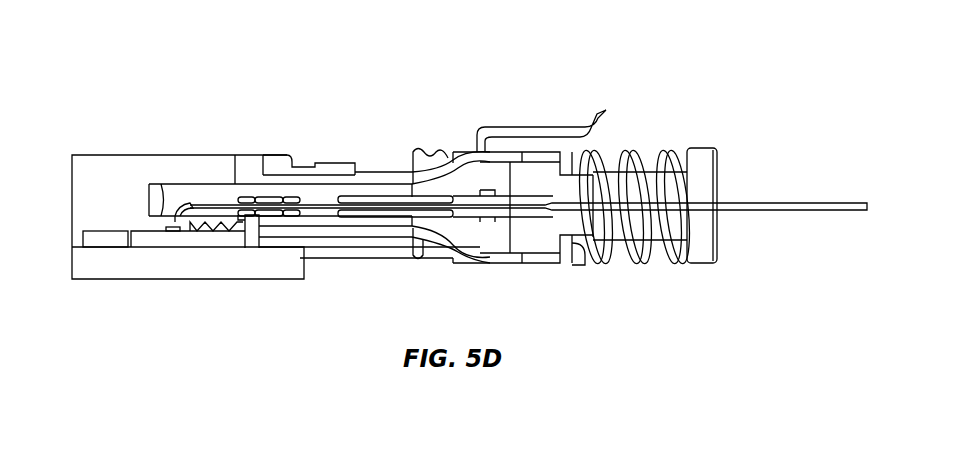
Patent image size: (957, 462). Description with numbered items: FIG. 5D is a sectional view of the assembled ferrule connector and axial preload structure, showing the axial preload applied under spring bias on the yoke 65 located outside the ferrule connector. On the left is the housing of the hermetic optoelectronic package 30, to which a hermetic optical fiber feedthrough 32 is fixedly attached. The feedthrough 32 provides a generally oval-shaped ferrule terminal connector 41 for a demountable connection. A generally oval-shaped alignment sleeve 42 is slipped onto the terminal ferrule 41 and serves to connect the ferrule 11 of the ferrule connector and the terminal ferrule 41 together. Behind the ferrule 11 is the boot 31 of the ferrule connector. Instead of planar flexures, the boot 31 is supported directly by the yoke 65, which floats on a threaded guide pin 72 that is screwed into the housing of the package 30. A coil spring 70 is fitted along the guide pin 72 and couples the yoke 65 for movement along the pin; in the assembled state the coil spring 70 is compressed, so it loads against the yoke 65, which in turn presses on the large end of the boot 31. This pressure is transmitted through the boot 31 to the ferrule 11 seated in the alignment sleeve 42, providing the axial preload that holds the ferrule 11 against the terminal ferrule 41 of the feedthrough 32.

The hermetic optoelectronic package 30 is at (273, 166).
The hermetic optical fiber feedthrough 32 is at (328, 193).
The alignment sleeve 42 is at (460, 190).
The ferrule terminal connector 41 is at (367, 208).
The ferrule 11 is at (465, 230).
The boot 31 is at (535, 238).
The yoke 65 is at (543, 123).
The coil spring 70 is at (638, 157).
The threaded guide pin 72 is at (703, 172).